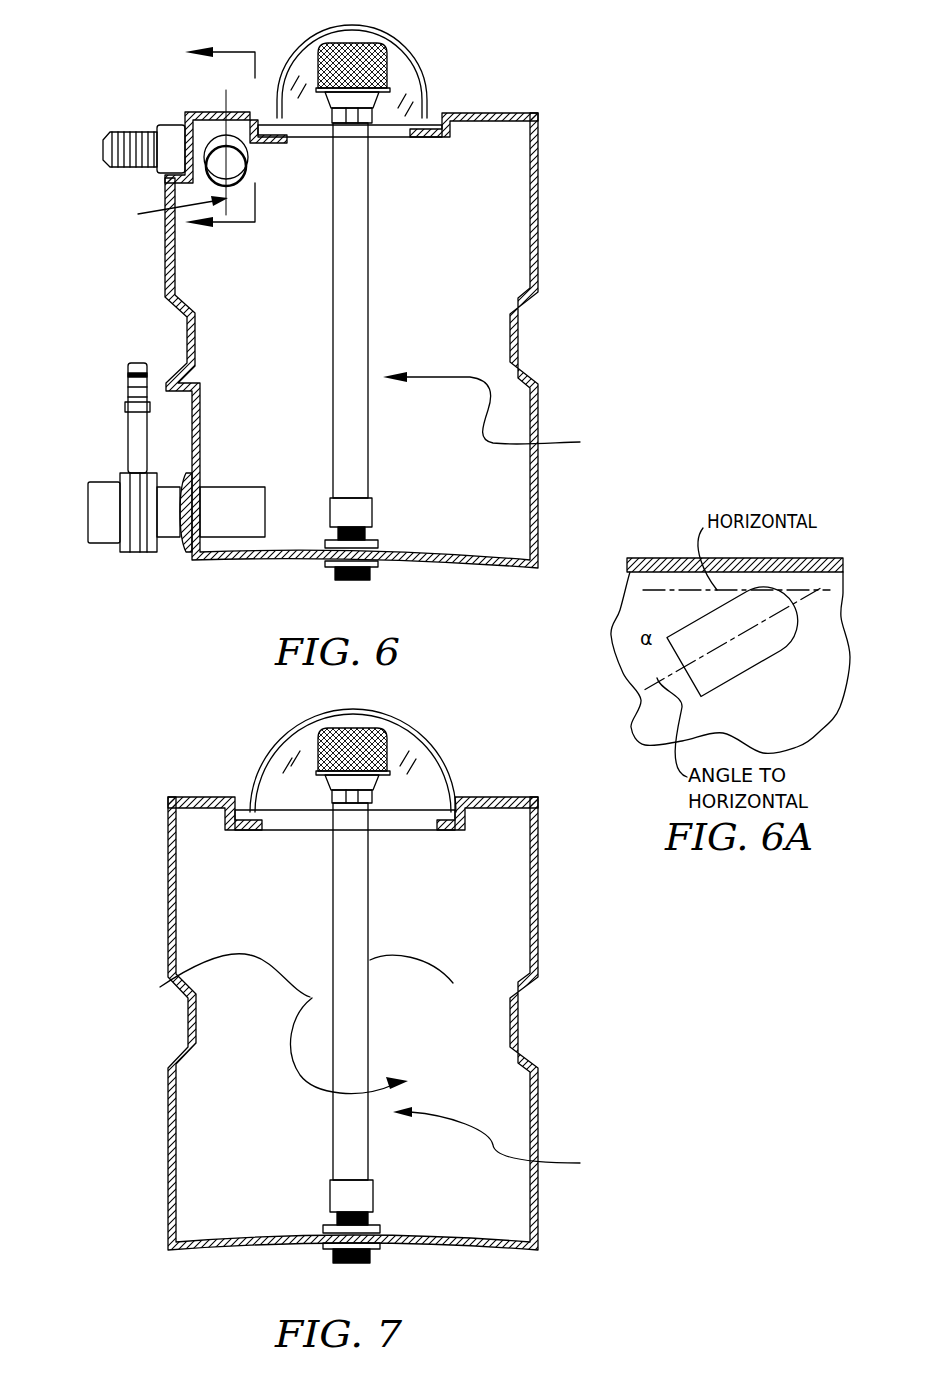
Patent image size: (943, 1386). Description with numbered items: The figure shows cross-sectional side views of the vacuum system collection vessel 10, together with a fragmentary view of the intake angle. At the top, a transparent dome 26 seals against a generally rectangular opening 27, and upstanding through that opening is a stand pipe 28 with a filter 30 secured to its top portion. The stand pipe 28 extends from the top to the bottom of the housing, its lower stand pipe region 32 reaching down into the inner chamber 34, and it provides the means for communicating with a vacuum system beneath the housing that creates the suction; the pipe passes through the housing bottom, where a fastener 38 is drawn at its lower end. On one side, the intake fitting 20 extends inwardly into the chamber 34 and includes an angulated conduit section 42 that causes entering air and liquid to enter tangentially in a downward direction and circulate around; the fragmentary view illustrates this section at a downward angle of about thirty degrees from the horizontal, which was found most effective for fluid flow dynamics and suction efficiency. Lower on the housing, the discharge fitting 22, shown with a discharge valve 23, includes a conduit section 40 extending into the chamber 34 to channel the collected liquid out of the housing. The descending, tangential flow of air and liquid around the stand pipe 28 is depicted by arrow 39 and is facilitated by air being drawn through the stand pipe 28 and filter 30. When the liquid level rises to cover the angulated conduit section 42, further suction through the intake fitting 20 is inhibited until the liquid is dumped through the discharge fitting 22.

In FIG. 6, the vacuum system collection vessel 10 is at (128, 42).
In FIG. 7, the vacuum system collection vessel 10 is at (128, 774).
In FIG. 6, the intake fitting 20 is at (125, 130).
In FIG. 6, the discharge fitting 22 is at (95, 538).
In FIG. 6, the discharge valve 23 is at (132, 423).
In FIG. 6, the transparent dome 26 is at (428, 80).
In FIG. 7, the transparent dome 26 is at (437, 763).
In FIG. 6, the rectangular opening 27 is at (403, 127).
In FIG. 7, the rectangular opening 27 is at (437, 822).
In FIG. 6, the stand pipe 28 is at (495, 415).
In FIG. 7, the stand pipe 28 is at (500, 1144).
In FIG. 6, the filter 30 is at (382, 45).
In FIG. 7, the filter 30 is at (380, 732).
In FIG. 6, the lower stand pipe region 32 is at (368, 190).
In FIG. 7, the lower stand pipe region 32 is at (368, 868).
In FIG. 6, the inner chamber 34 is at (497, 290).
In FIG. 7, the inner chamber 34 is at (497, 968).
In FIG. 6, the nut 38 is at (368, 573).
In FIG. 7, the nut 38 is at (367, 1262).
In FIG. 7, the arrow 39 is at (160, 987).
In FIG. 6, the conduit section 40 is at (232, 523).
In FIG. 6, the angulated conduit section 42 is at (198, 130).
In FIG. 6A, the angulated conduit section 42 is at (733, 672).